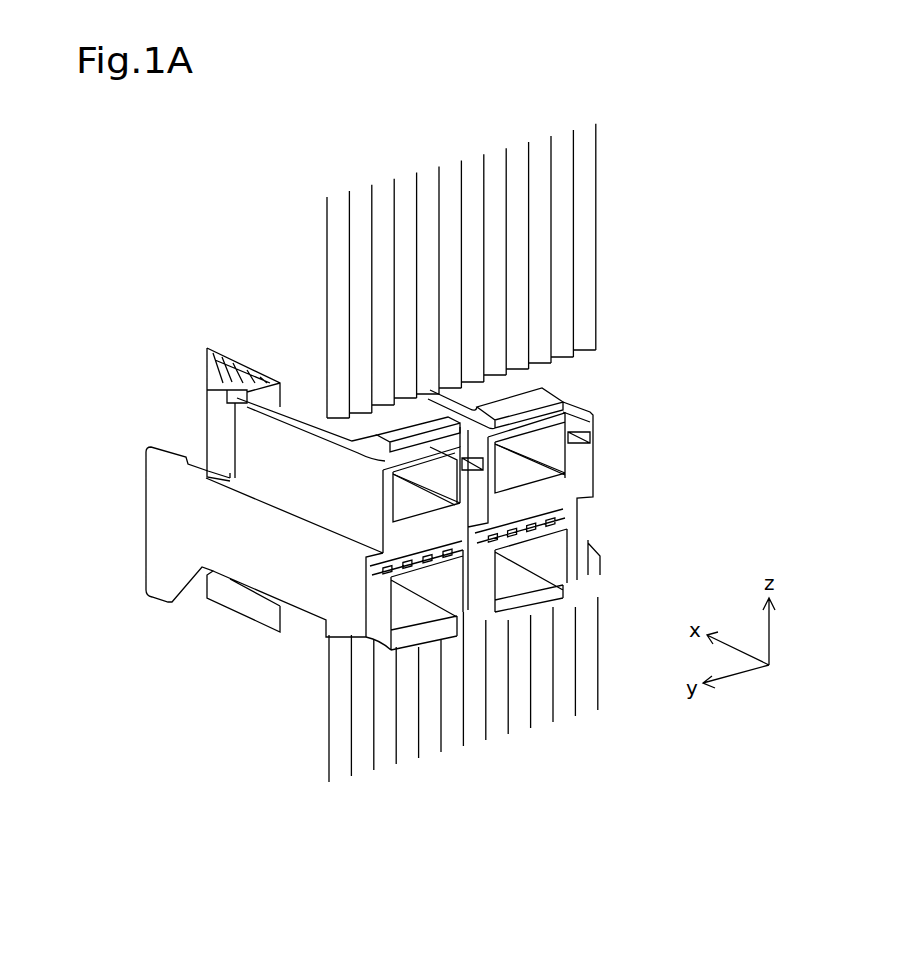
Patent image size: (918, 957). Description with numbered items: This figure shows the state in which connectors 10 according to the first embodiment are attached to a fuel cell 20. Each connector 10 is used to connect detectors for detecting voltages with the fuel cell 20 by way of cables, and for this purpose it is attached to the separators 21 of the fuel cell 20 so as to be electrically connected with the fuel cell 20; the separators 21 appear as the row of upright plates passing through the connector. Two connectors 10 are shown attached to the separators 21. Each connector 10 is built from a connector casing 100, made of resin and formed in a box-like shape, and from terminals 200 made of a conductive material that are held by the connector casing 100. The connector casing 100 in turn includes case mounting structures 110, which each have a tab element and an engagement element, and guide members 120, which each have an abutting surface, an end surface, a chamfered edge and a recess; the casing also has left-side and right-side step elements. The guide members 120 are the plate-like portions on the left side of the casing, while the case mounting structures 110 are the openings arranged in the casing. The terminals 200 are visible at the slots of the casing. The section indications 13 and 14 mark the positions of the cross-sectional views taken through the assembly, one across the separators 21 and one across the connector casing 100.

The connector 10 is at (80, 630).
The section line 13 is at (298, 279).
The section line 14 is at (175, 414).
The fuel cell 20 is at (507, 438).
The separator 21 is at (594, 279).
The connector casing 100 is at (260, 560).
The case mounting structure 110 is at (400, 433).
The guide member 120 is at (218, 413).
The terminal 200 is at (593, 422).